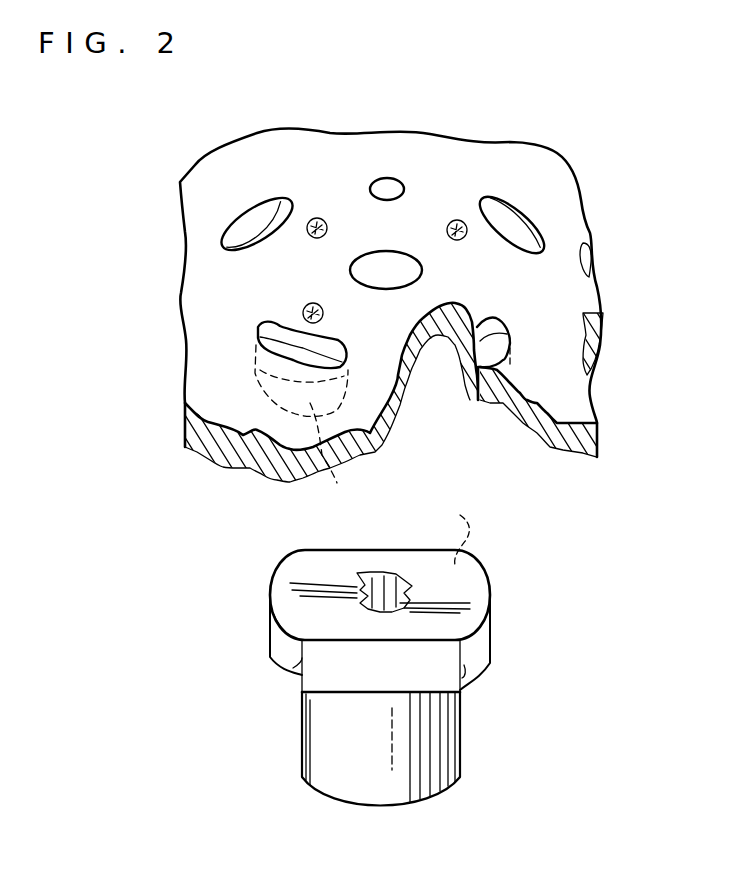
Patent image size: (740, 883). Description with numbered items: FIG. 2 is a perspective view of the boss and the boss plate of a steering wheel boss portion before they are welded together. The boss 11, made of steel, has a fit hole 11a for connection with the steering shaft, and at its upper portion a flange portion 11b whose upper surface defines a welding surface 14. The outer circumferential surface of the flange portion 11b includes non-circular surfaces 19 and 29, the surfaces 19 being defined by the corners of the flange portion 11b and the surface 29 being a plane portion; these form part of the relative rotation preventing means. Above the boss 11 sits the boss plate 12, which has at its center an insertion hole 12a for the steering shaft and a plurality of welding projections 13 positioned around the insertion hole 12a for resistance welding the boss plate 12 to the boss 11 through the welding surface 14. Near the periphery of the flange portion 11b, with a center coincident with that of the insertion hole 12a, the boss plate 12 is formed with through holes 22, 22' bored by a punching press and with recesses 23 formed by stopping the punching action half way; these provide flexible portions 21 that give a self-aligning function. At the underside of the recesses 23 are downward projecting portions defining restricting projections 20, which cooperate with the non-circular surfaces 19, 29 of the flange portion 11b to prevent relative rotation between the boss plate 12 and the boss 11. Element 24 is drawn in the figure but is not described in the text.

The boss 11 is at (453, 757).
The fit hole 11a is at (380, 617).
The flange portion 11b is at (483, 640).
The boss plate 12 is at (522, 152).
The insertion hole 12a is at (415, 268).
The welding projections 13 is at (317, 220).
The welding surface 14 is at (290, 568).
The non-circular surfaces 19 is at (267, 693).
The restricting projections 20 is at (470, 400).
The flexible portions 21 is at (340, 167).
The through holes 22 is at (390, 206).
The through hole 22' is at (385, 168).
The recesses 23 is at (267, 322).
The stopper piece 24 is at (490, 405).
The non-circular surface (plane portion) 29 is at (338, 682).